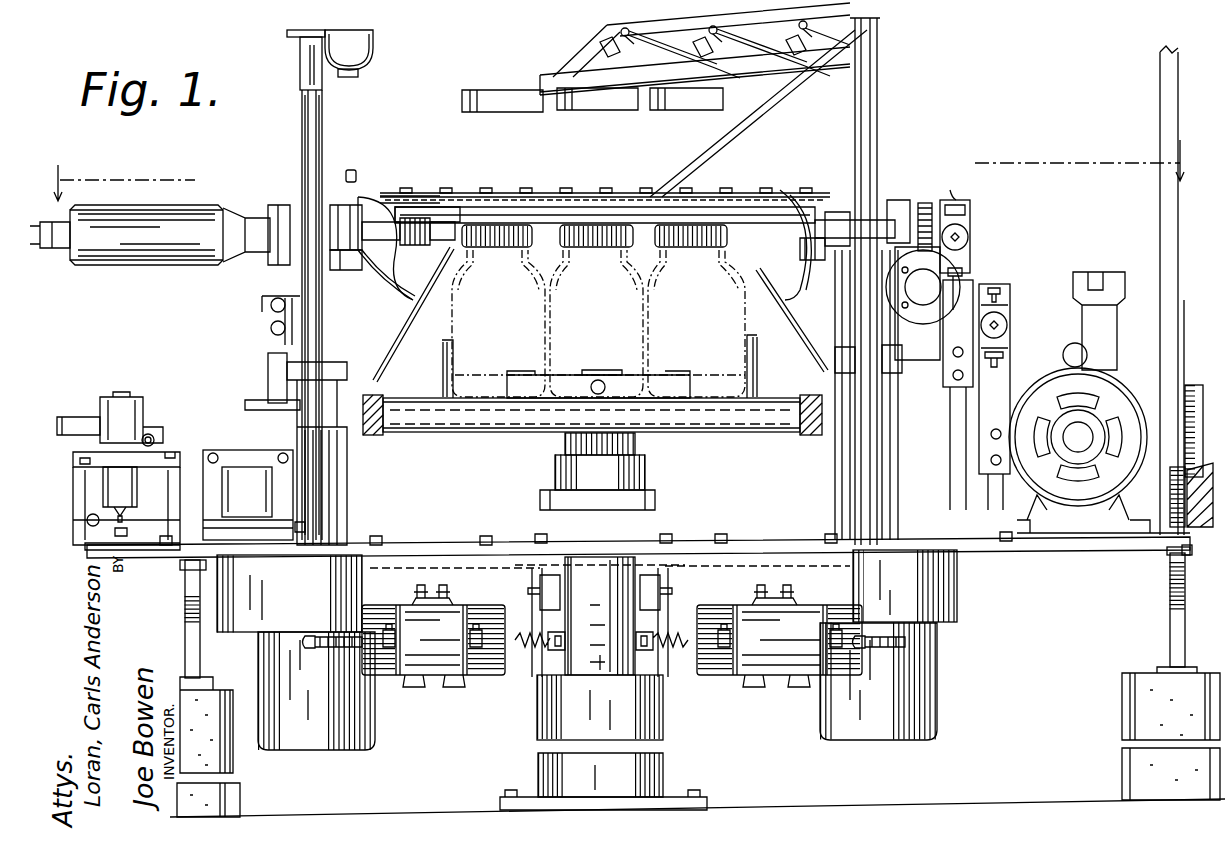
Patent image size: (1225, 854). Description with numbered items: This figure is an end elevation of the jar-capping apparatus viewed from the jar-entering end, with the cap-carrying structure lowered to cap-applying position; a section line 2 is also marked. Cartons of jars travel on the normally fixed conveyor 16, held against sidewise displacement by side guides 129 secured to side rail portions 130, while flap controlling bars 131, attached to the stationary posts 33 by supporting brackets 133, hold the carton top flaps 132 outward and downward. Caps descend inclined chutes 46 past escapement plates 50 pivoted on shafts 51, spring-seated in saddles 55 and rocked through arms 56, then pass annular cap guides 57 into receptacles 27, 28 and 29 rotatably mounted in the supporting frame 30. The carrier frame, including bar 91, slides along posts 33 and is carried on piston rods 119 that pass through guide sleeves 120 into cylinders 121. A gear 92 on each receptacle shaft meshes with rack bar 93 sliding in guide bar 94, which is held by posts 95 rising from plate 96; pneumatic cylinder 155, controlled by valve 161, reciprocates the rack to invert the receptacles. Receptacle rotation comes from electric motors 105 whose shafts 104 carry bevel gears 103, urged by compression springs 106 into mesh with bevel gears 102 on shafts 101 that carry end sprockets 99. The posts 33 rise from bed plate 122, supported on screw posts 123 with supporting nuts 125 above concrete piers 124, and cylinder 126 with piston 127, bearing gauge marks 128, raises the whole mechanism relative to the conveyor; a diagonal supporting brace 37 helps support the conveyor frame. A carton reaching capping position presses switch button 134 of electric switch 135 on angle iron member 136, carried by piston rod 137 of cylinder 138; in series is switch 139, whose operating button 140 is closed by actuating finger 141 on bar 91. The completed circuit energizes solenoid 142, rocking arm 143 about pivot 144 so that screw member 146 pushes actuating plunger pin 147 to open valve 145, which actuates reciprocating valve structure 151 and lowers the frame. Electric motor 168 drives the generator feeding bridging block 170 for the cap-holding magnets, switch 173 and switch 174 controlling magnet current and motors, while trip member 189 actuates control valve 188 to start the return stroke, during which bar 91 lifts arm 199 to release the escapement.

The section line 2- 2 is at (604, 170).
The conveyor 16 is at (753, 433).
The receptacle 27 is at (500, 250).
The receptacle 28 is at (596, 250).
The receptacle 29 is at (691, 250).
The supporting frame 30 is at (535, 194).
The posts 33 is at (302, 58).
The diagonal supporting brace 37 is at (1196, 557).
The cap chutes 46 is at (580, 58).
The plates 50 is at (628, 28).
The pivot shafts 51 is at (615, 32).
The saddles 55 is at (612, 49).
The arms 56 is at (853, 32).
The annular cap guides 57 is at (530, 103).
The bar 91 is at (597, 210).
The gear 92 is at (926, 204).
The rack bar 93 is at (962, 232).
The guide bar 94 is at (970, 250).
The posts 95 is at (937, 325).
The plate 96 is at (948, 348).
The end sprockets 99 is at (429, 195).
The shafts 101 is at (432, 205).
The bevel gears 102 is at (424, 228).
The bevel gears 103 is at (405, 242).
The shafts 104 is at (416, 250).
The electric motors 105 is at (192, 212).
The compression springs 106 is at (393, 218).
The piston rods 119 is at (343, 300).
The guide sleeves 120 is at (347, 488).
The cylinders 121 is at (250, 622).
The bed plate 122 is at (428, 540).
The screw posts 123 is at (186, 585).
The concrete piers 124 is at (235, 762).
The supporting nuts 125 is at (180, 564).
The cylinder 126 is at (665, 755).
The piston 127 is at (560, 652).
The gauge marks 128 is at (604, 625).
The side guides 129 is at (447, 366).
The side rail portions 130 is at (380, 437).
The flap controlling bars 131 is at (392, 326).
The carton top flaps 132 is at (399, 330).
The supporting brackets 133 is at (355, 265).
The switch button 134 is at (605, 370).
The electric switch 135 is at (598, 379).
The angle iron member 136 is at (519, 376).
The piston rod 137 is at (598, 444).
The cylinder 138 is at (637, 490).
The switch 139 is at (372, 42).
The operating button 140 is at (360, 73).
The actuating finger 141 is at (352, 170).
The solenoid 142 is at (245, 468).
The arm 143 is at (258, 560).
The pivot 144 is at (108, 520).
The valve 145 is at (133, 395).
The screw member 146 is at (123, 518).
The actuating plunger pin 147 is at (112, 512).
The reciprocating valve structure 151 is at (470, 688).
The pneumatic cylinder 155 is at (975, 272).
The valve 161 is at (830, 678).
The electric motor 168 is at (1120, 390).
The bridging block 170 is at (1108, 272).
The switch 173 is at (271, 325).
The switch 174 is at (271, 302).
The control valve 188 is at (280, 354).
The trip member 189 is at (302, 122).
The arm 199 is at (770, 113).